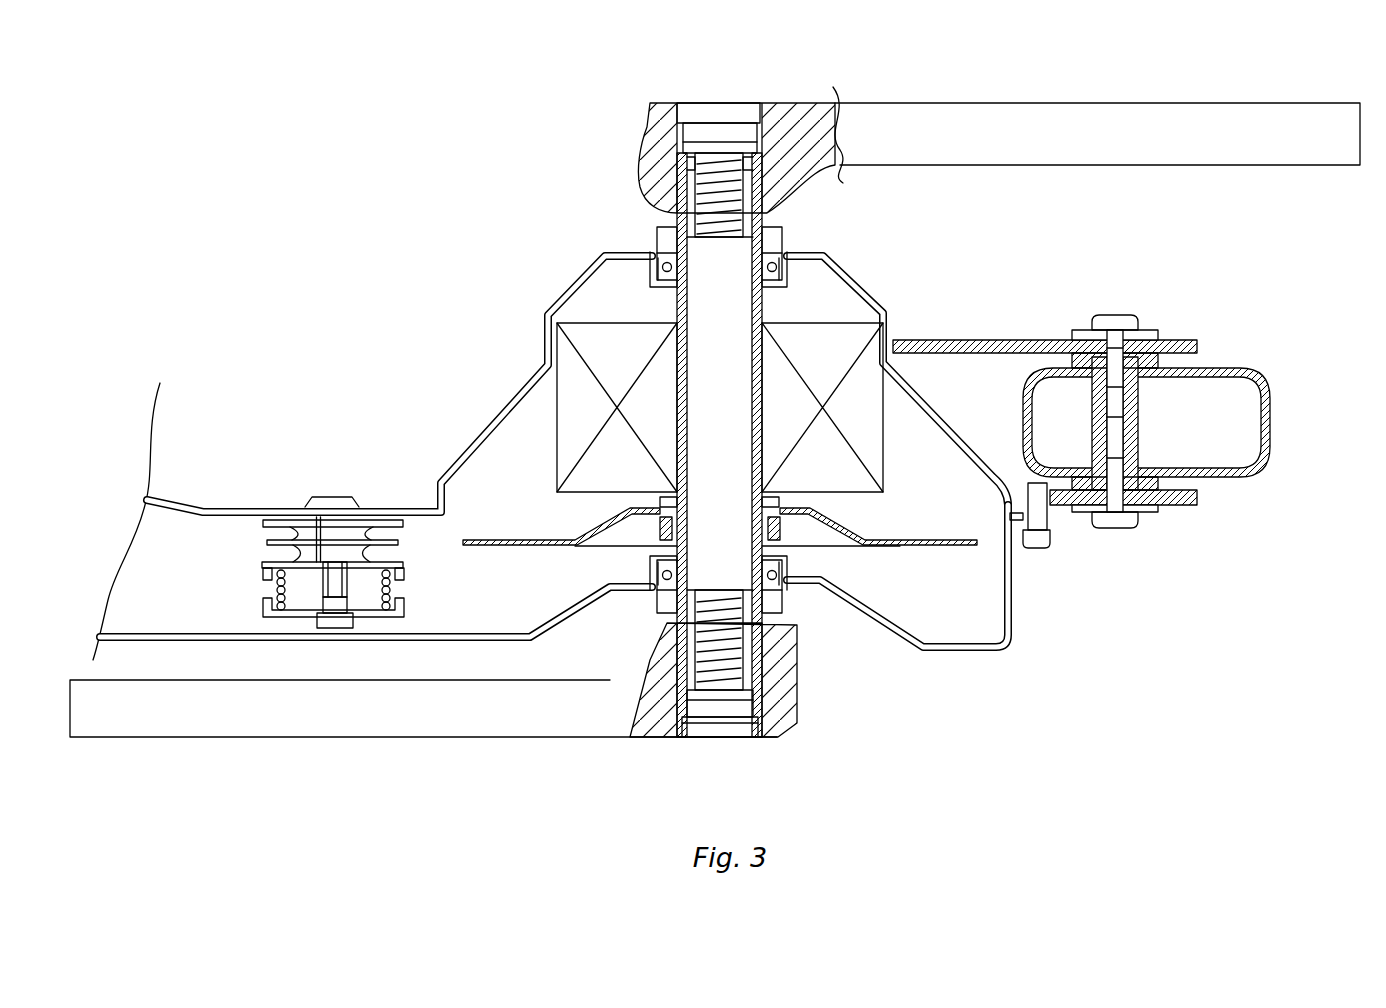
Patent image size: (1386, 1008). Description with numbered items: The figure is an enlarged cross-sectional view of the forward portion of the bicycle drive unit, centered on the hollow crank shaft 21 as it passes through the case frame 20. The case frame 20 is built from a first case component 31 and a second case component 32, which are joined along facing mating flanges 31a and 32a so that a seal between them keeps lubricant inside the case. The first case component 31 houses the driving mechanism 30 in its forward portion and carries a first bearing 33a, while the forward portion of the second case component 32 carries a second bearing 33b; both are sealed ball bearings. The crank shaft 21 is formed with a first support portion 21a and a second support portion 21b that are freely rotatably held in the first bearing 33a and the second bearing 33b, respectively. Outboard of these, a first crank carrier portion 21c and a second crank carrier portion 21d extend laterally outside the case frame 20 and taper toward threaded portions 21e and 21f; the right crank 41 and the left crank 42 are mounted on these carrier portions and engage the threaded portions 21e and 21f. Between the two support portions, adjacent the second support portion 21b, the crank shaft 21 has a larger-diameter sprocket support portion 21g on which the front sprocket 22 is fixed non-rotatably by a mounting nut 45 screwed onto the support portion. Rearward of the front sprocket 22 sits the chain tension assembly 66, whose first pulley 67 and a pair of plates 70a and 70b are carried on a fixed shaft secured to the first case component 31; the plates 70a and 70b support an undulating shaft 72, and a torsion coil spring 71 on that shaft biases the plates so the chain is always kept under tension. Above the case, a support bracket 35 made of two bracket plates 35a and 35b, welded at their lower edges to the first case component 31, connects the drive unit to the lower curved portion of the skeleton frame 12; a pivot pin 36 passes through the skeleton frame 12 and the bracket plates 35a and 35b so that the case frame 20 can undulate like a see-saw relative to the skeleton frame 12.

The skeleton frame 12 is at (1270, 405).
The case frame 20 is at (936, 682).
The crank shaft 21 is at (767, 308).
The first support portion 21a is at (667, 242).
The second support portion 21b is at (643, 770).
The first crank carrier portion 21c is at (688, 168).
The second crank carrier portion 21d is at (757, 692).
The threaded portion 21e is at (683, 153).
The threaded portion 21f is at (773, 737).
The sprocket support portion 21g is at (786, 510).
The front sprocket 22 is at (527, 554).
The driving mechanism 30 is at (567, 390).
The first case component 31 is at (884, 302).
The mating flange 31a is at (1050, 512).
The second case component 32 is at (983, 656).
The mating flange 32a is at (1050, 522).
The first bearing 33a is at (783, 242).
The second bearing 33b is at (779, 588).
The support bracket 35 is at (1168, 312).
The bracket plate 35a is at (1197, 345).
The bracket plate 35b is at (1197, 500).
The pivot pin 36 is at (1117, 445).
The right crank 41 is at (1013, 116).
The left crank 42 is at (183, 713).
The mounting nut 45 is at (792, 548).
The chain tension assembly 66 is at (378, 518).
The first pulley 67 is at (405, 540).
The plate 70a is at (283, 518).
The plate 70b is at (263, 562).
The torsion coil spring 71 is at (397, 593).
The undulating shaft 72 is at (345, 628).